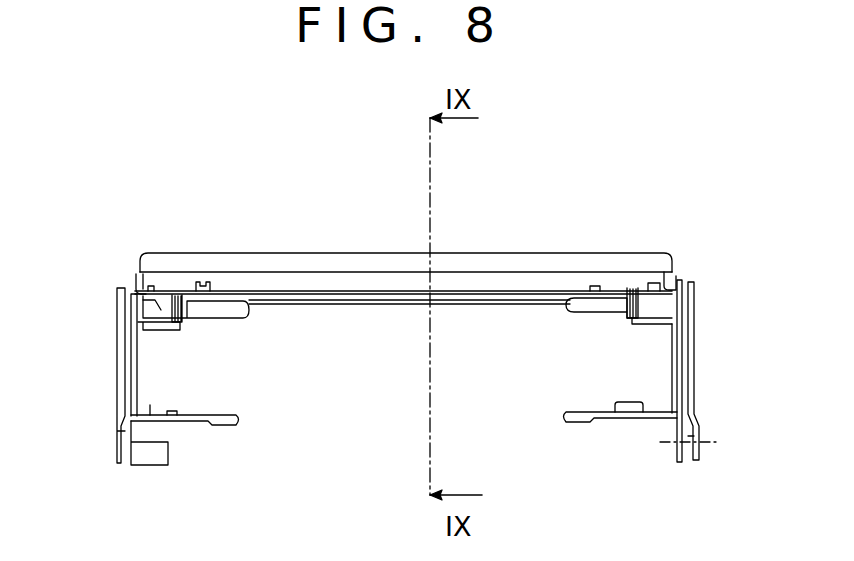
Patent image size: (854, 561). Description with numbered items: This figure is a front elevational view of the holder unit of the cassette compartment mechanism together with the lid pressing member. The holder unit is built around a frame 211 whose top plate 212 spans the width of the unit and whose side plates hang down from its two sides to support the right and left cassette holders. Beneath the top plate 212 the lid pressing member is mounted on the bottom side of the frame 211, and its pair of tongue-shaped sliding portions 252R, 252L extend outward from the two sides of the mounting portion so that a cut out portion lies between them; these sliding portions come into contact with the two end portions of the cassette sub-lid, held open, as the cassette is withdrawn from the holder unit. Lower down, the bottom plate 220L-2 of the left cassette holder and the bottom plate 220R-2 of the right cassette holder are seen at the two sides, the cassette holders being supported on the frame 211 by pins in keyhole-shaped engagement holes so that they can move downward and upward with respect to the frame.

The frame 211 is at (455, 250).
The top plate 212 is at (337, 262).
The sliding portion 252L is at (218, 308).
The sliding portion 252R is at (590, 300).
The bottom plate 220L-2 is at (198, 424).
The bottom plate 220R-2 is at (603, 418).